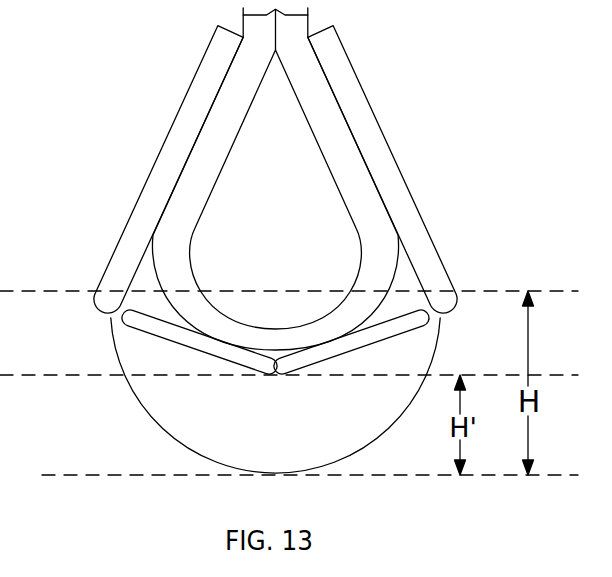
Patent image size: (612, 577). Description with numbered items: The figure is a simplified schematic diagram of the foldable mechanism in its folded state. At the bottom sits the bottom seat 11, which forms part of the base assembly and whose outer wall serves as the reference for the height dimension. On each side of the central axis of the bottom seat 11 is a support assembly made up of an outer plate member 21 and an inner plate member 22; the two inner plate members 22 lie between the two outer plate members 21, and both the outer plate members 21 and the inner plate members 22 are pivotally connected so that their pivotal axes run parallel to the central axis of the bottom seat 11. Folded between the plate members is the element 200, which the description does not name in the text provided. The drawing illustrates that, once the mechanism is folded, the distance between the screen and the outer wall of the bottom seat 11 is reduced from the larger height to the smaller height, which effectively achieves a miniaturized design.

The bottom seat 11 is at (140, 395).
The folded flexible tube / bent member 200 is at (340, 157).
The outer plate member 21 is at (152, 220).
The inner plate member 22 is at (212, 343).